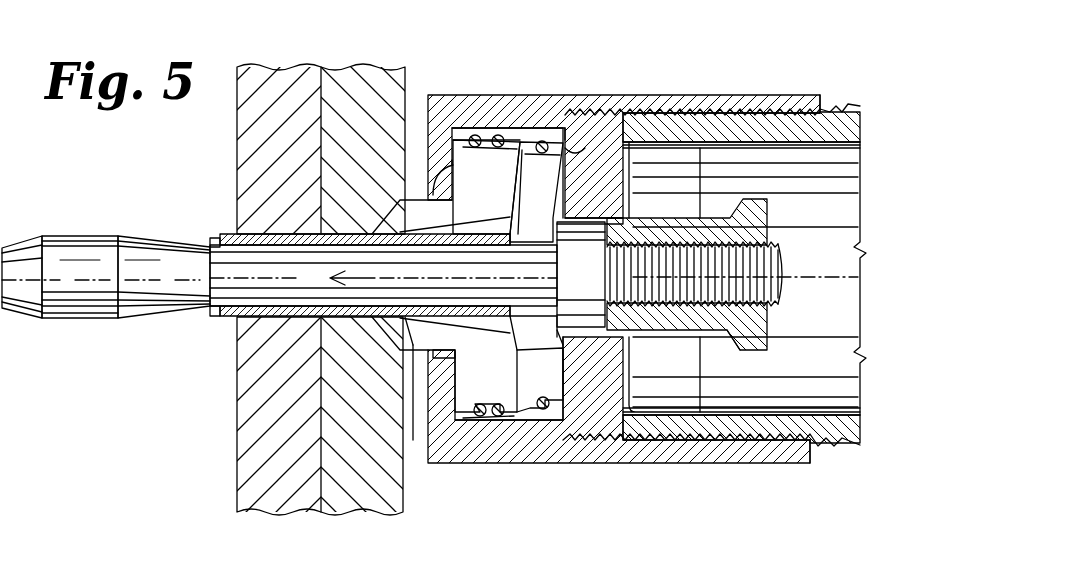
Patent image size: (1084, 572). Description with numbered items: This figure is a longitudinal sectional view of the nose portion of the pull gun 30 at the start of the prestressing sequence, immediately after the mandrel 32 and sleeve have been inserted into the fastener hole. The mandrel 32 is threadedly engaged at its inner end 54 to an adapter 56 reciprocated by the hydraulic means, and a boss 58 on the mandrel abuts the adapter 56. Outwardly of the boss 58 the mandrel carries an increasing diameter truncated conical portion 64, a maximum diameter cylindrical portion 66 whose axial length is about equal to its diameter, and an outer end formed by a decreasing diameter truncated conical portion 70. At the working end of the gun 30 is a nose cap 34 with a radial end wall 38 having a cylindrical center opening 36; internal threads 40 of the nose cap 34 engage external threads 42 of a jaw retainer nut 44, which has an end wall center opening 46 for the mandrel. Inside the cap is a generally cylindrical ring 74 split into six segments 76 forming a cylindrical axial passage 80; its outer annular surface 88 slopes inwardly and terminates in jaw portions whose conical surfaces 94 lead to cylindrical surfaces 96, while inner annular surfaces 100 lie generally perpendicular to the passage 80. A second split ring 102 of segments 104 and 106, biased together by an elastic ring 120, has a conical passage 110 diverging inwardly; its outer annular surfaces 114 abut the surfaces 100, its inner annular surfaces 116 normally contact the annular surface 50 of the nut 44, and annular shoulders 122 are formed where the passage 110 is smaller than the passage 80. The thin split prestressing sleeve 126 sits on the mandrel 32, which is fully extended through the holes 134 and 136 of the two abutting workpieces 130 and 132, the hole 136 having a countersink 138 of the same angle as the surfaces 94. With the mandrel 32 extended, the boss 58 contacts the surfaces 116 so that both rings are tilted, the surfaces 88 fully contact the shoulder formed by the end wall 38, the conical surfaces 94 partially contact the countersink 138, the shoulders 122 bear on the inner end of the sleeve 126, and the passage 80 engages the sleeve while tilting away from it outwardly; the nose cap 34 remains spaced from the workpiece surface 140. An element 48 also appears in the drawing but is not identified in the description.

The pull gun 30 is at (598, 466).
The mandrel 32 is at (106, 280).
The nose cap 34 is at (712, 466).
The cylindrical center opening 36 is at (440, 352).
The radial end wall 38 is at (510, 424).
The internal threads 40 is at (768, 442).
The external threads 42 is at (624, 320).
The jaw retainer nut 44 is at (630, 386).
The end wall center opening 46 is at (658, 150).
The nut 48 is at (714, 283).
The annular surface 50 is at (532, 122).
The inner end 54 is at (648, 268).
The adapter 56 is at (752, 346).
The boss 58 is at (594, 281).
The truncated conical portion 64 is at (153, 240).
The maximum diameter cylindrical portion 66 is at (73, 248).
The truncated conical decreasing diameter portion 70 is at (26, 250).
The generally cylindrical ring 74 is at (486, 133).
The segments 76 is at (494, 178).
The cylindrical axially directed passage 80 is at (422, 232).
The outer annular surface 88 is at (445, 194).
The conical surfaces 94 is at (321, 288).
The cylindrical surfaces 96 is at (413, 470).
The inner annular surfaces 100 is at (547, 170).
The second split ring 102 is at (534, 430).
The segments 104 is at (548, 372).
The ring segments 106 is at (575, 148).
The conical passage 110 is at (536, 192).
The outer annular surfaces 114 is at (486, 187).
The inner annular surfaces 116 is at (560, 347).
The elastic ring 120 is at (545, 140).
The annular shoulders 122 is at (525, 243).
The prestressing sleeve 126 is at (222, 318).
The workpiece 130 is at (281, 512).
The workpiece 132 is at (357, 512).
The hole 134 is at (215, 240).
The hole 136 is at (378, 240).
The countersink 138 is at (425, 240).
The workpiece surface 140 is at (408, 440).